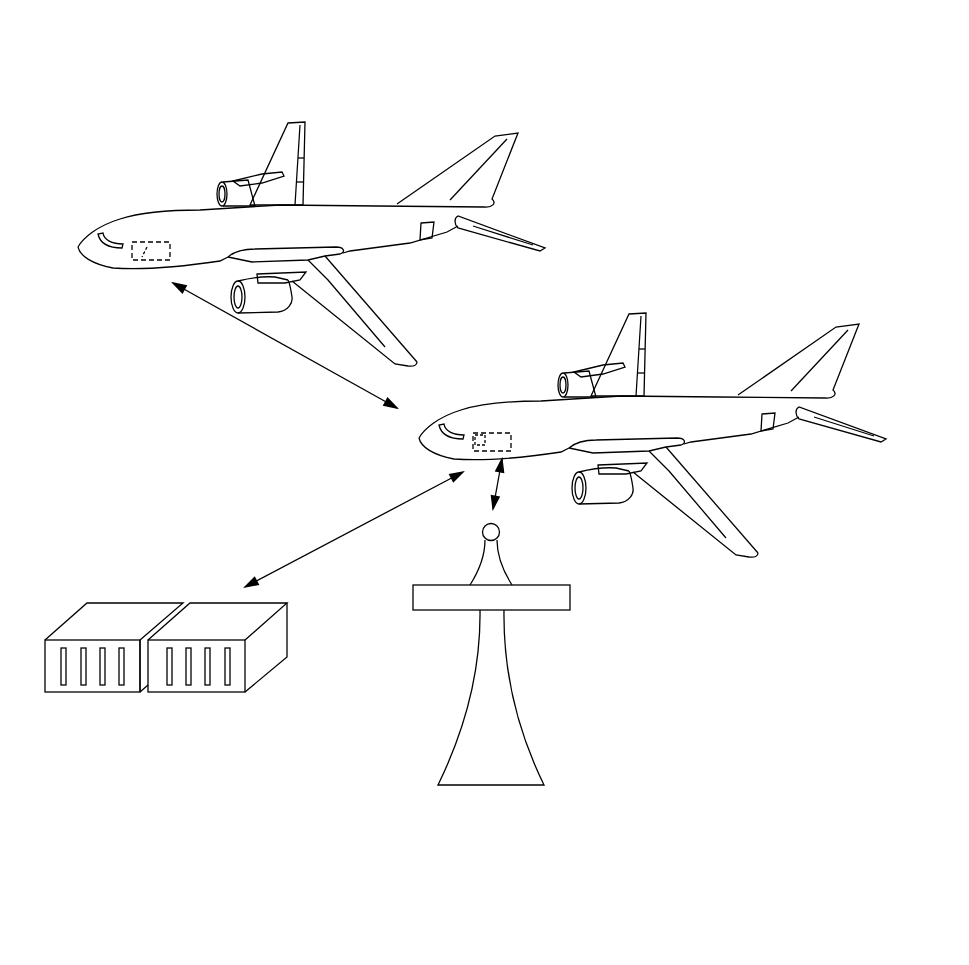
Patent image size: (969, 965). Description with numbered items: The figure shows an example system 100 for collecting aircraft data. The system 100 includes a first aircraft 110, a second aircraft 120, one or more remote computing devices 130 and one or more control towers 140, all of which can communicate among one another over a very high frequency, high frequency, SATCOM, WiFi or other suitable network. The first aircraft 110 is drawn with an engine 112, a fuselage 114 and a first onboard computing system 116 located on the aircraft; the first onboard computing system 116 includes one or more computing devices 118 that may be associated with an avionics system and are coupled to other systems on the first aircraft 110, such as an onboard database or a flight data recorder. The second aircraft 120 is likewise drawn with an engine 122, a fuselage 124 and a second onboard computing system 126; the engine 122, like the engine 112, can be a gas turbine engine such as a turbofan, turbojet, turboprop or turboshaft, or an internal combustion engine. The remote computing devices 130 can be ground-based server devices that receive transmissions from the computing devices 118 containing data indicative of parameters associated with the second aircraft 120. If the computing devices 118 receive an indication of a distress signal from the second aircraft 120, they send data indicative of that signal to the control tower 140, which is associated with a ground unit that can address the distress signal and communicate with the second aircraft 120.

The system 100 is at (126, 74).
The first aircraft 110 is at (653, 390).
The engine 112 is at (602, 518).
The fuselage 114 is at (622, 384).
The first onboard computing system 116 is at (491, 380).
The computing device 118 is at (436, 461).
The second aircraft 120 is at (146, 211).
The engine 122 is at (235, 179).
The fuselage 124 is at (300, 232).
The second onboard computing system 126 is at (135, 270).
The remote computing device 130 is at (69, 718).
The control tower 140 is at (502, 700).